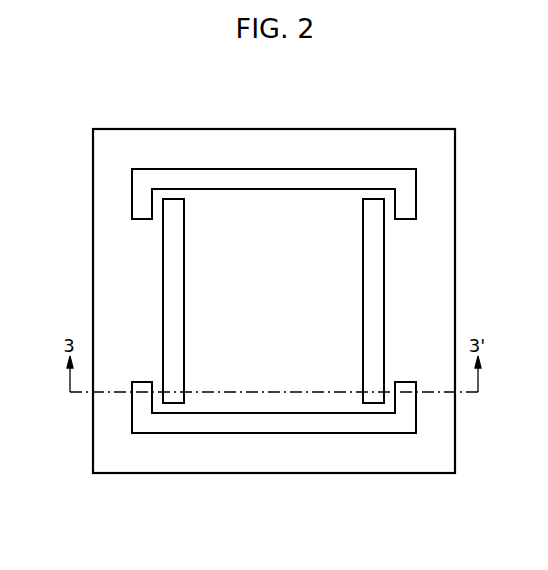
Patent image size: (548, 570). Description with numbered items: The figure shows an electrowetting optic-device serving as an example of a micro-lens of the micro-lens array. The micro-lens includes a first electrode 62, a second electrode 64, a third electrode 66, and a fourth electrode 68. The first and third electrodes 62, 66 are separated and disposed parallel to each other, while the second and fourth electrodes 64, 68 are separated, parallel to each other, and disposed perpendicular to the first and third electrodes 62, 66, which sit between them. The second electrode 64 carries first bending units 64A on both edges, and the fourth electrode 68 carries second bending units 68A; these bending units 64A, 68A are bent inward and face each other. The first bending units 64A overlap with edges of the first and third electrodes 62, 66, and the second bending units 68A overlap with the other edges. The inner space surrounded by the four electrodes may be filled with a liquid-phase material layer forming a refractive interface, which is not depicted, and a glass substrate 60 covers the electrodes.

The glass substrate 60 is at (450, 152).
The first electrode 62 is at (170, 278).
The second electrode 64 is at (274, 424).
The first bending units 64A is at (408, 398).
The third electrode 66 is at (378, 278).
The fourth electrode 68 is at (273, 177).
The second bending units 68A is at (137, 206).